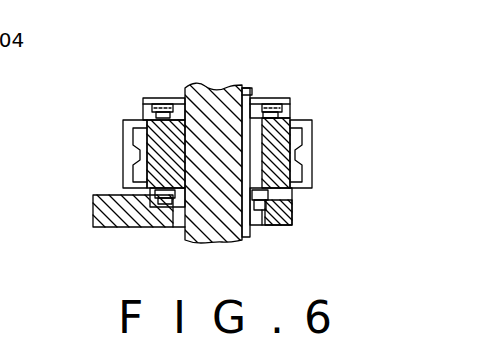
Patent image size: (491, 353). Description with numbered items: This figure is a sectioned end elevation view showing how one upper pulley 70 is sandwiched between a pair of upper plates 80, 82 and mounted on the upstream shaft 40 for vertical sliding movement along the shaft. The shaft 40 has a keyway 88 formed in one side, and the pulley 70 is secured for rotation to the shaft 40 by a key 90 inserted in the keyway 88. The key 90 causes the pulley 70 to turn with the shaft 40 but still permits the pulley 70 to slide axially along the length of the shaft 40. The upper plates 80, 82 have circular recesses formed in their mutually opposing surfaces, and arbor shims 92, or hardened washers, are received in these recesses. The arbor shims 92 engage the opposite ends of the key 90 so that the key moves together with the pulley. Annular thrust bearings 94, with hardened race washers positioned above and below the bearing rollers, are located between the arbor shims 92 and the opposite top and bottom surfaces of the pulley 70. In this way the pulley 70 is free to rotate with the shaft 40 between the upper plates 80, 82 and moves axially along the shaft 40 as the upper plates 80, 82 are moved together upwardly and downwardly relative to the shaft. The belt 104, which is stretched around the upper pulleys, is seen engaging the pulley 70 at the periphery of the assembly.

The upstream shaft 40 is at (185, 239).
The upper pulley 70 is at (128, 133).
The top upper plate 80 is at (143, 101).
The bottom upper plate 82 is at (93, 200).
The keyway 88 is at (254, 88).
The key 90 is at (253, 148).
The arbor shims 92 is at (265, 100).
The annular thrust bearings 94 is at (282, 98).
The belt 104 is at (312, 130).